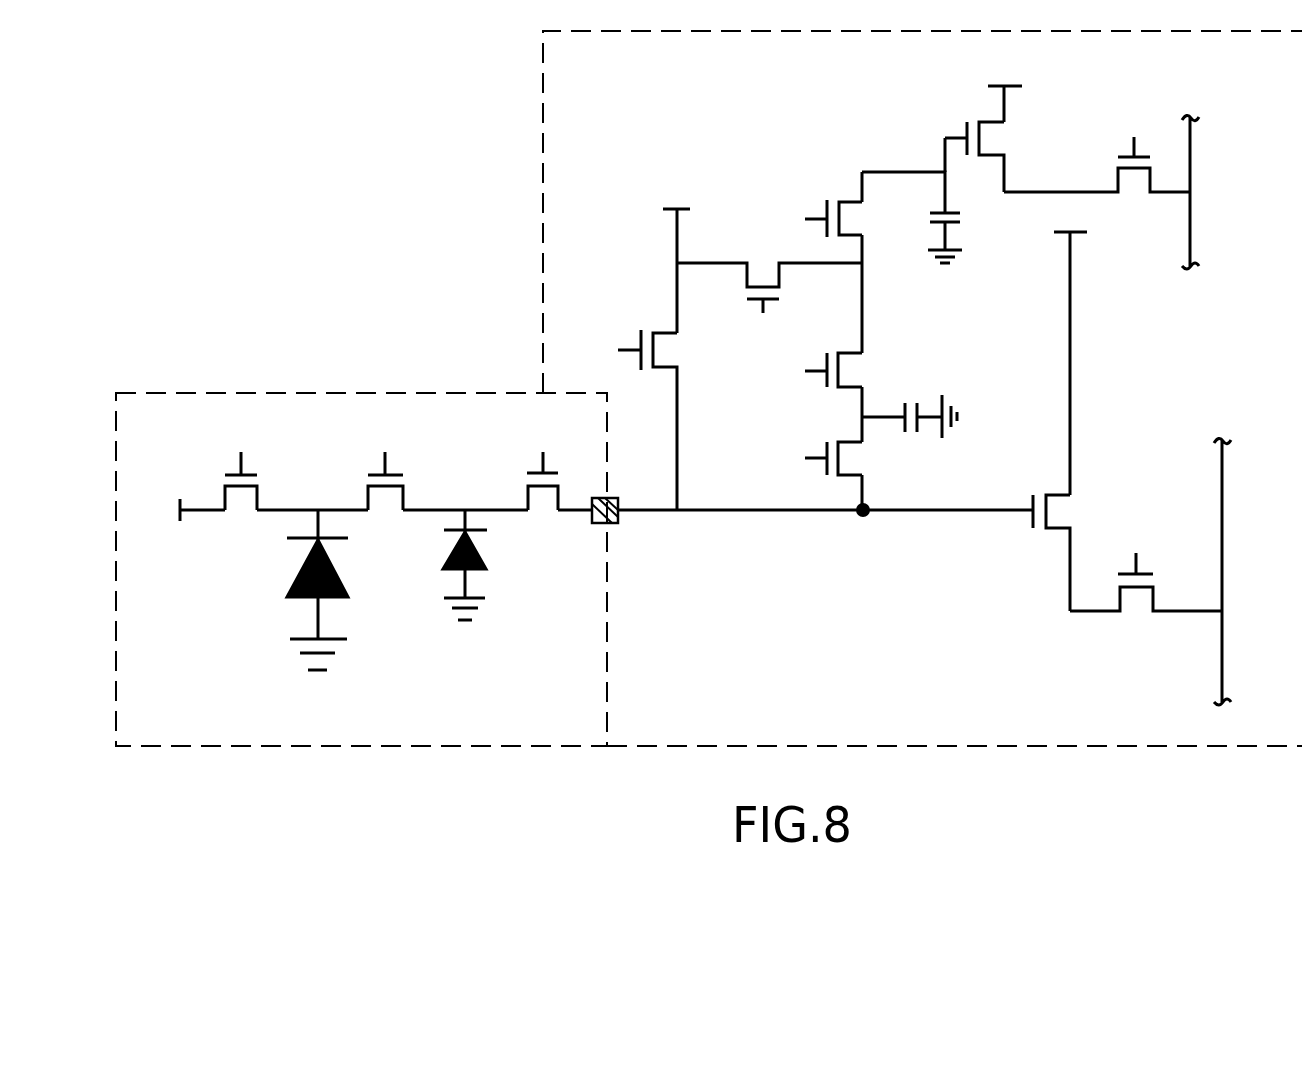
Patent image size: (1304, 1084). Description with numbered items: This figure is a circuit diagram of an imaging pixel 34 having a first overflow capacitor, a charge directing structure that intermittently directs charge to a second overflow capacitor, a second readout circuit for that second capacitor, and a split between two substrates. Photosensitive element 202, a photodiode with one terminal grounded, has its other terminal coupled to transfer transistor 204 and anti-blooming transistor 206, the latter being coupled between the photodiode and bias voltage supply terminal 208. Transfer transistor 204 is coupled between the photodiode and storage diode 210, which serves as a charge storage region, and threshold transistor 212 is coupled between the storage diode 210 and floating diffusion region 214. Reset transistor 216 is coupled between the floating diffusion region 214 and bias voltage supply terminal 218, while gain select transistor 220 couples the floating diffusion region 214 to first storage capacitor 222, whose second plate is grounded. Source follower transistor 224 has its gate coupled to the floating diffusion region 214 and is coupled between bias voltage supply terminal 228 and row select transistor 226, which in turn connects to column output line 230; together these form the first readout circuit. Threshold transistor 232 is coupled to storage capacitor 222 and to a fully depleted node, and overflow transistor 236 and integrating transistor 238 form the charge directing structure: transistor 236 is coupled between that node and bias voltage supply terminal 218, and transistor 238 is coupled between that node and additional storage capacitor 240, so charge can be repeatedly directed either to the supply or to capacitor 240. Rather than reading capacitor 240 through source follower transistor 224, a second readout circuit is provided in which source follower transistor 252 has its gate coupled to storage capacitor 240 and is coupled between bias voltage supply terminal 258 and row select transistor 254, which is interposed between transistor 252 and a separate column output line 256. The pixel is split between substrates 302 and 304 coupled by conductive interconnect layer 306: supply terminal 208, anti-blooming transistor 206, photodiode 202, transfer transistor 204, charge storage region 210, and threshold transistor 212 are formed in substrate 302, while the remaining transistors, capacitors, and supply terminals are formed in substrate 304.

The pixel 34 is at (292, 198).
The substrate 302 is at (262, 391).
The substrate 304 is at (543, 158).
The photosensitive element 202 is at (358, 600).
The transfer transistor 204 is at (355, 497).
The anti-blooming transistor 206 is at (207, 496).
The bias voltage supply terminal 208 is at (182, 512).
The storage diode 210 is at (489, 587).
The threshold transistor 212 is at (515, 496).
The floating diffusion region 214 is at (858, 515).
The reset transistor 216 is at (648, 326).
The bias voltage supply terminal 218 is at (672, 213).
The gain select transistor 220 is at (848, 485).
The first storage capacitor 222 is at (932, 396).
The source follower transistor 224 is at (1045, 537).
The row select transistor 226 is at (1133, 612).
The bias voltage supply terminal 228 is at (1063, 235).
The column output line 230 is at (1224, 663).
The threshold transistor 232 is at (870, 367).
The overflow transistor 236 is at (760, 254).
The integrating transistor 238 is at (832, 191).
The storage capacitor 240 is at (930, 196).
The source follower transistor 252 is at (988, 106).
The row select transistor 254 is at (1133, 187).
The column output line 256 is at (1193, 150).
The bias voltage supply terminal 258 is at (1012, 88).
The conductive interconnect layer 306 is at (618, 521).